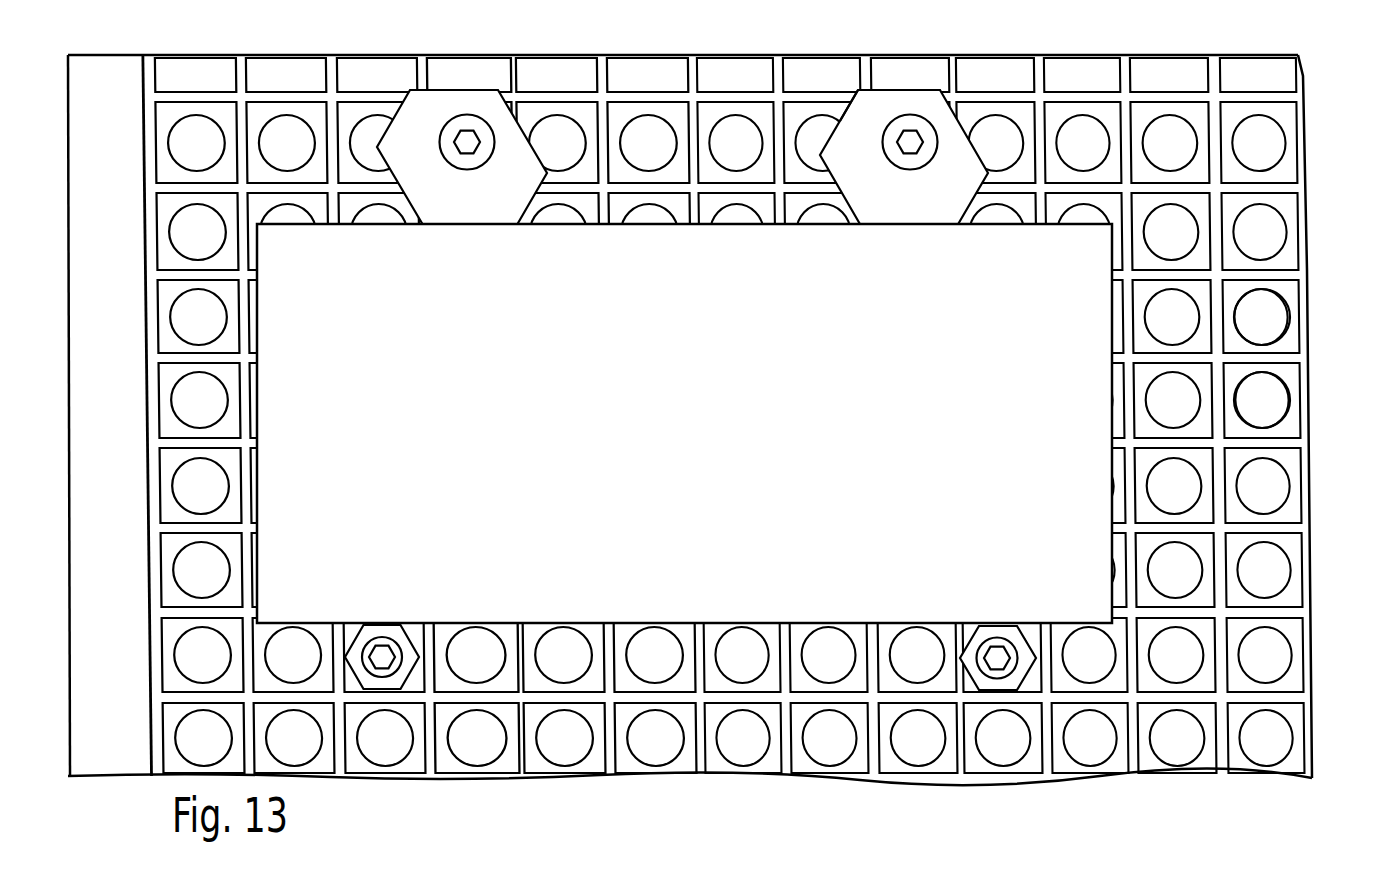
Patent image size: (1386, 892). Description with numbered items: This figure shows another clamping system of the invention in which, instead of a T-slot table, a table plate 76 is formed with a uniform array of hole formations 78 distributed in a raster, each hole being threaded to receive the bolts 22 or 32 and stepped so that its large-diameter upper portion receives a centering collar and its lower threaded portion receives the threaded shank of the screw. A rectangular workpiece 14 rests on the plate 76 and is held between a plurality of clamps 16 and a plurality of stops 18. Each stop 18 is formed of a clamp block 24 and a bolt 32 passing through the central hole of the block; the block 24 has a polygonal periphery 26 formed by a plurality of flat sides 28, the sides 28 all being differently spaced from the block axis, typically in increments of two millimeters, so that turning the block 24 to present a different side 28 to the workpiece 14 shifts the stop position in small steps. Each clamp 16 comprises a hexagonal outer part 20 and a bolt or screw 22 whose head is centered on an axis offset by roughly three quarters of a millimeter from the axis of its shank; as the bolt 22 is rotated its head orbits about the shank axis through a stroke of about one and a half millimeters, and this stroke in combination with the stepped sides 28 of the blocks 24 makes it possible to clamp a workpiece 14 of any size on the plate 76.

The workpiece 14 is at (556, 447).
The clamp 16 is at (704, 748).
The stop 18 is at (460, 97).
The outer part 20 is at (993, 678).
The bolt or screw 22 is at (988, 660).
The clamp block 24 is at (909, 175).
The polygonal periphery 26 is at (880, 142).
The flat side 28 is at (915, 88).
The bolt 32 is at (836, 108).
The table plate 76 is at (1313, 263).
The hole formation 78 is at (1275, 400).